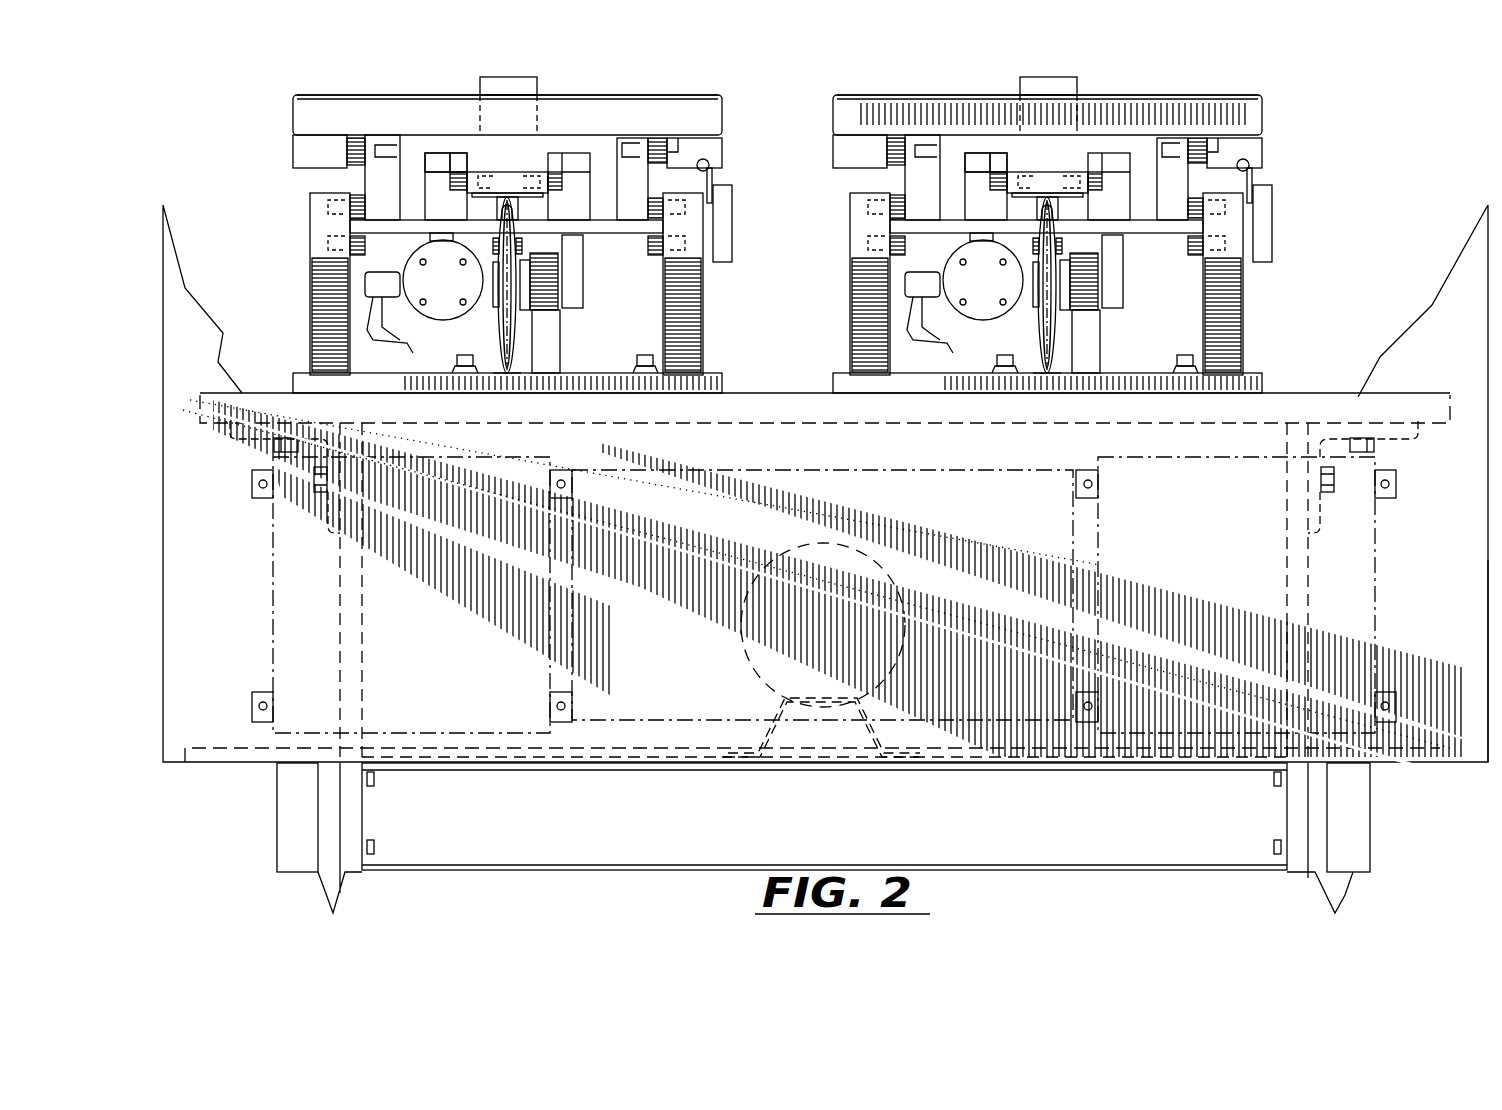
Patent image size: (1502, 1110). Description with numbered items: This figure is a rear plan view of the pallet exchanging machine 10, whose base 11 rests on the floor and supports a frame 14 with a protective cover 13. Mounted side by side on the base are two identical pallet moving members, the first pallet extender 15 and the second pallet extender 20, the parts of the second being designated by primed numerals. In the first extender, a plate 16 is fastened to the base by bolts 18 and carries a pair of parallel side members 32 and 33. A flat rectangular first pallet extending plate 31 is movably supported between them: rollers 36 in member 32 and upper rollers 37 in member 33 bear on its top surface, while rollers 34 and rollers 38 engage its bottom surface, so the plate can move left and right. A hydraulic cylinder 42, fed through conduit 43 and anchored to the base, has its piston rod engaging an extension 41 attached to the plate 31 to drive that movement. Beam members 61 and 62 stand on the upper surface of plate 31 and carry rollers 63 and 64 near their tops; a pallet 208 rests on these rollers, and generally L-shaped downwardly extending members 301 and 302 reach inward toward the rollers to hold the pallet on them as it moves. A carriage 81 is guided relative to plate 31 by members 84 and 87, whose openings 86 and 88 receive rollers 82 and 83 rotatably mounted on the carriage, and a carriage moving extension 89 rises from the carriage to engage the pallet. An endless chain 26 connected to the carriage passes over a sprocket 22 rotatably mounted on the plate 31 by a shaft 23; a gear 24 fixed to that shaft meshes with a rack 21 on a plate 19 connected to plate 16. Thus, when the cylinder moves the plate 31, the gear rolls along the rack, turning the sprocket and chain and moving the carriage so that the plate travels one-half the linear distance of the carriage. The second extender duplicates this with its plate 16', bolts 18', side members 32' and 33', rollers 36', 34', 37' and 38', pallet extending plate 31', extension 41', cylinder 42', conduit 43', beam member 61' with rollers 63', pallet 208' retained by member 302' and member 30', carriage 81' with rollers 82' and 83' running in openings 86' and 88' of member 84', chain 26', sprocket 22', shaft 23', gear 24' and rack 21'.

The pallet exchanging machine 10 is at (1368, 232).
The base 11 is at (1370, 845).
The protective cover 13 is at (1428, 640).
The frame 14 is at (1306, 393).
The pallet moving member 15 is at (607, 82).
The plate 16 is at (479, 355).
The bolts 18 is at (555, 345).
The plate 19 is at (560, 336).
The pallet moving member 20 is at (1310, 64).
The rack 21 is at (550, 225).
The sprocket 22 is at (494, 415).
The shaft 23 is at (594, 271).
The gear 24 is at (539, 226).
The endless chain 26 is at (545, 285).
The first pallet extending plate 31 is at (506, 204).
The side member 32 is at (289, 284).
The side member 33 is at (704, 284).
The rollers 34 is at (296, 257).
The rollers 36 is at (297, 197).
The upper rollers 37 is at (739, 229).
The rollers 38 is at (697, 272).
The extension 41 is at (414, 246).
The cylinder 42 is at (443, 295).
The conduit 43 is at (386, 320).
The beam member 61 is at (361, 135).
The beam member 62 is at (641, 152).
The rollers 63 is at (313, 106).
The rollers 64 is at (682, 150).
The carriage 81 is at (448, 123).
The roller 82 is at (426, 107).
The roller 83 is at (529, 146).
The member 84 is at (416, 186).
The opening 86 is at (409, 139).
The member 87 is at (630, 180).
The opening 88 is at (569, 161).
The carriage moving extension 89 is at (508, 86).
The pallet 208 is at (463, 115).
The downwardly extending member 301 is at (300, 154).
The downwardly extending member 302 is at (739, 184).
The plate 16' is at (1019, 359).
The bolts 18' is at (1087, 345).
The rack 21' is at (1052, 317).
The sprocket 22' is at (1000, 396).
The shaft 23' is at (1136, 271).
The gear 24' is at (1012, 329).
The endless chain 26' is at (1031, 356).
The end block 30' is at (837, 152).
The first pallet extending plate 31' is at (1046, 230).
The side member 32' is at (842, 284).
The side member 33' is at (1246, 284).
The rollers 34' is at (856, 231).
The rollers 36' is at (856, 196).
The upper rollers 37' is at (1286, 223).
The rollers 38' is at (1249, 256).
The extension 41' is at (952, 247).
The cylinder 42' is at (915, 346).
The conduit 43' is at (923, 321).
The beam member 61' is at (944, 133).
The rollers 63' is at (904, 112).
The carriage 81' is at (1092, 121).
The roller 82' is at (1064, 114).
The roller 83' is at (1164, 127).
The member 84' is at (1136, 130).
The opening 86' is at (886, 133).
The opening 88' is at (1179, 142).
The pallet 208' is at (1087, 115).
The downwardly extending member 302' is at (1290, 179).